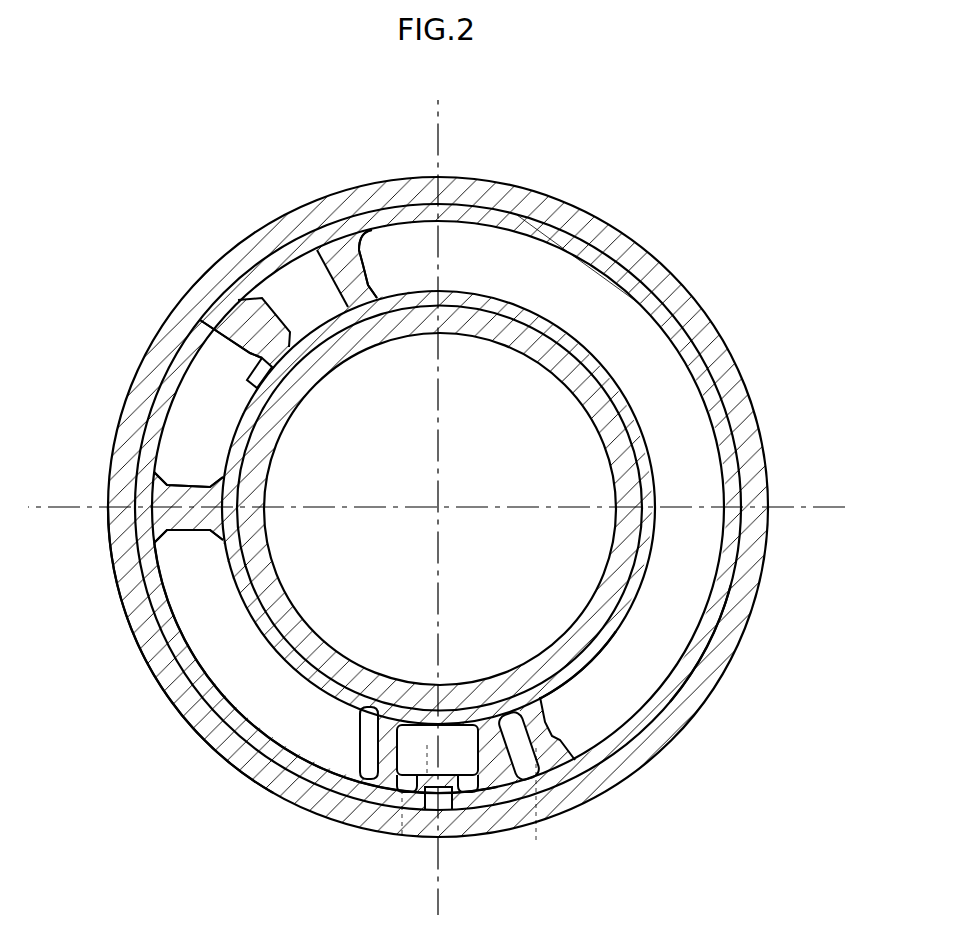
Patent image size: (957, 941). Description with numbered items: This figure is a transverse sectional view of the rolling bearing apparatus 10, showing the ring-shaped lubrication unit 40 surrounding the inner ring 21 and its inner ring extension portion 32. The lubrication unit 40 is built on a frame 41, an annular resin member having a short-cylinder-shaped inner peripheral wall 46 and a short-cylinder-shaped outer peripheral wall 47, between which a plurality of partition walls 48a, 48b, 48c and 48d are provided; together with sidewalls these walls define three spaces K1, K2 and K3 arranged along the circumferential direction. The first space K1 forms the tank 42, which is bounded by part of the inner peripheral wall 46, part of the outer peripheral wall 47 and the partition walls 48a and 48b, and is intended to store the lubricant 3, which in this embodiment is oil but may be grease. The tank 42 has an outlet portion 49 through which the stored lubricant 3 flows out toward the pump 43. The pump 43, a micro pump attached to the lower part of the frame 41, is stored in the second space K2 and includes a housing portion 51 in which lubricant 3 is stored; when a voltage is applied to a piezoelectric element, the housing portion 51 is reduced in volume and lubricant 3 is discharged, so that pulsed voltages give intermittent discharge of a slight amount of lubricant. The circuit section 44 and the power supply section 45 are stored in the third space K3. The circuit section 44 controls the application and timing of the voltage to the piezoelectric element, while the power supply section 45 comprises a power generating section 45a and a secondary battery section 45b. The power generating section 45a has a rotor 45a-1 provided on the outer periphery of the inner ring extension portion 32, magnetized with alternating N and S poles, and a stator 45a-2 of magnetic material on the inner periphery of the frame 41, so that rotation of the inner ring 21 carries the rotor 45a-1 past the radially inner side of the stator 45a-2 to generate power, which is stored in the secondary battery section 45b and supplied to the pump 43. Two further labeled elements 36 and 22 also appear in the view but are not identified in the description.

The rolling bearing apparatus 10 is at (643, 245).
The lubrication unit 40 is at (517, 215).
The tank 42 is at (670, 400).
The first space K1 is at (664, 279).
The inner ring 21 is at (315, 632).
The inner ring extension portion 32 is at (277, 602).
The lubricant 3 is at (619, 340).
The outer peripheral wall 47 is at (693, 653).
The inner peripheral wall 46 is at (583, 658).
The housing 36 is at (135, 612).
The outer peripheral surface 22 is at (150, 680).
The frame 41 is at (347, 262).
The partition wall 48b is at (358, 268).
The power generating section 45a is at (190, 347).
The rotor 45a-1 is at (227, 365).
The stator 45a-2 is at (258, 382).
The power supply section 45 is at (192, 405).
The secondary battery section 45b is at (177, 457).
The third space K3 is at (170, 517).
The circuit section 44 is at (245, 688).
The partition wall 48c is at (365, 707).
The pump 43 is at (398, 768).
The housing portion 51 is at (422, 792).
The second space K2 is at (465, 792).
The outlet portion 49 is at (534, 790).
The partition wall 48d is at (498, 750).
The partition wall 48a is at (540, 733).